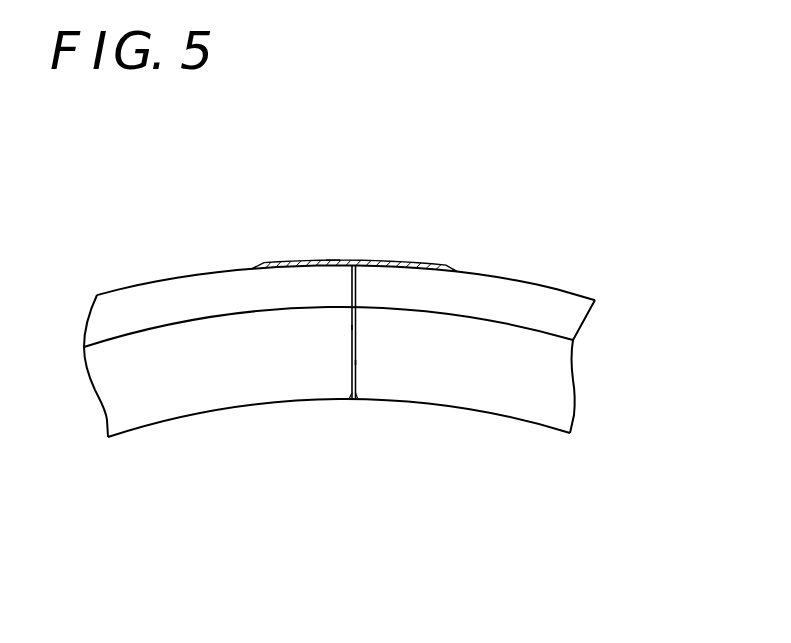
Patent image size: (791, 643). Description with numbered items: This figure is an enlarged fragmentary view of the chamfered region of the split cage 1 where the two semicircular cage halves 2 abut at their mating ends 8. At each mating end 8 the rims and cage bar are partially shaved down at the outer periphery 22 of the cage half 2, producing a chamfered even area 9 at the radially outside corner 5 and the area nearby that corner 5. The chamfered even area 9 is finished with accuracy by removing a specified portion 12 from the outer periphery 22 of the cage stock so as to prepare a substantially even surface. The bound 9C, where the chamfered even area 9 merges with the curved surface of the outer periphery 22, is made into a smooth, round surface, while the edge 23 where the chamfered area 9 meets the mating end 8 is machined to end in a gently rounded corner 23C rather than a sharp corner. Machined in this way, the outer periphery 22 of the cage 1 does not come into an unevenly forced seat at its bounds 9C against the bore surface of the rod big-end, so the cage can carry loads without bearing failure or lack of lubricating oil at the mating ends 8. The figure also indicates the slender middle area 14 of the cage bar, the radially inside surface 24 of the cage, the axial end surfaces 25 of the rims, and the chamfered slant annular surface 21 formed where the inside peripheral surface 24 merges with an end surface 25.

The split cage 1 is at (240, 261).
The semicircular cage half 2 is at (132, 362).
The radially outside corner 5 is at (392, 260).
The mating end 8 is at (350, 327).
The chamfered even area 9 is at (323, 260).
The bound 9C is at (250, 264).
The removed portion 12 is at (333, 259).
The slender area 14 is at (543, 302).
The slant annular surface 21 is at (153, 385).
The outer periphery 22 is at (177, 273).
The edge 23 is at (360, 260).
The rounded edge 23C is at (359, 262).
The radially inside surface 24 is at (200, 412).
The end surface 25 is at (132, 308).